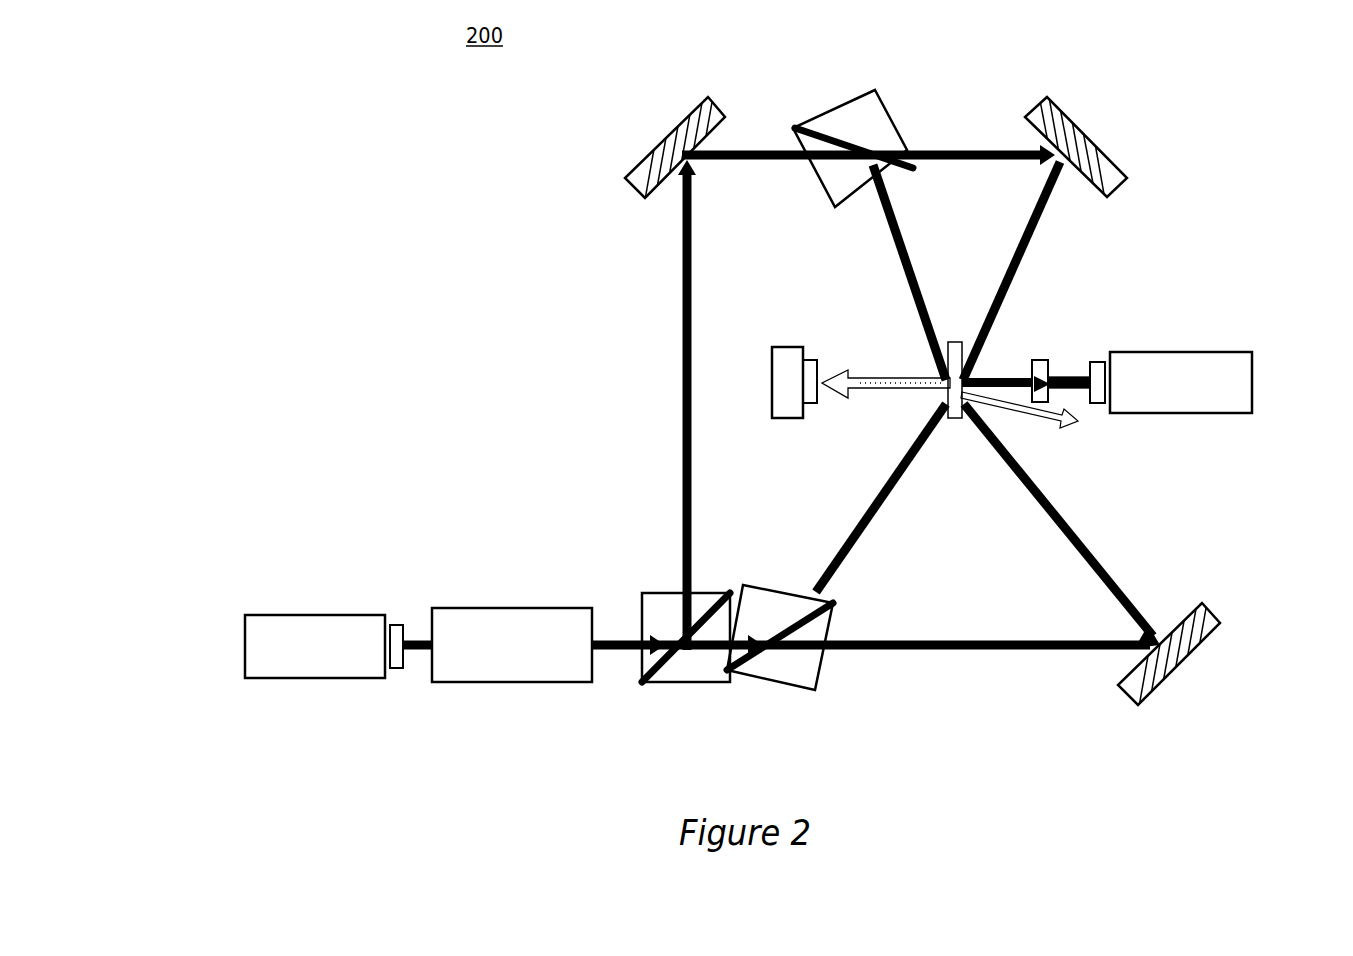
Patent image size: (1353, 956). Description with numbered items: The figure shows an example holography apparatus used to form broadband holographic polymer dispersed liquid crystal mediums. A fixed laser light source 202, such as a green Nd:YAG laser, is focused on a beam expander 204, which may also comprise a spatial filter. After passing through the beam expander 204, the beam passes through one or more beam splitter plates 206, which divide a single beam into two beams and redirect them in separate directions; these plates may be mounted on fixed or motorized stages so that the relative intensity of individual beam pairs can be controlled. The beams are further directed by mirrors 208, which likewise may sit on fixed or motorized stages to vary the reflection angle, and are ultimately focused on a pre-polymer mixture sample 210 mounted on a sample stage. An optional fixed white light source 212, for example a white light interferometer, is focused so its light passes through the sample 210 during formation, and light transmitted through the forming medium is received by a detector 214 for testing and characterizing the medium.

The fixed laser light source 202 is at (245, 637).
The beam expander 204 is at (560, 682).
The beam splitter plates 206 is at (770, 685).
The mirrors 208 is at (692, 112).
The pre-polymer mixture sample 210 is at (955, 418).
The fixed white light source 212 is at (1252, 378).
The detector 214 is at (775, 418).